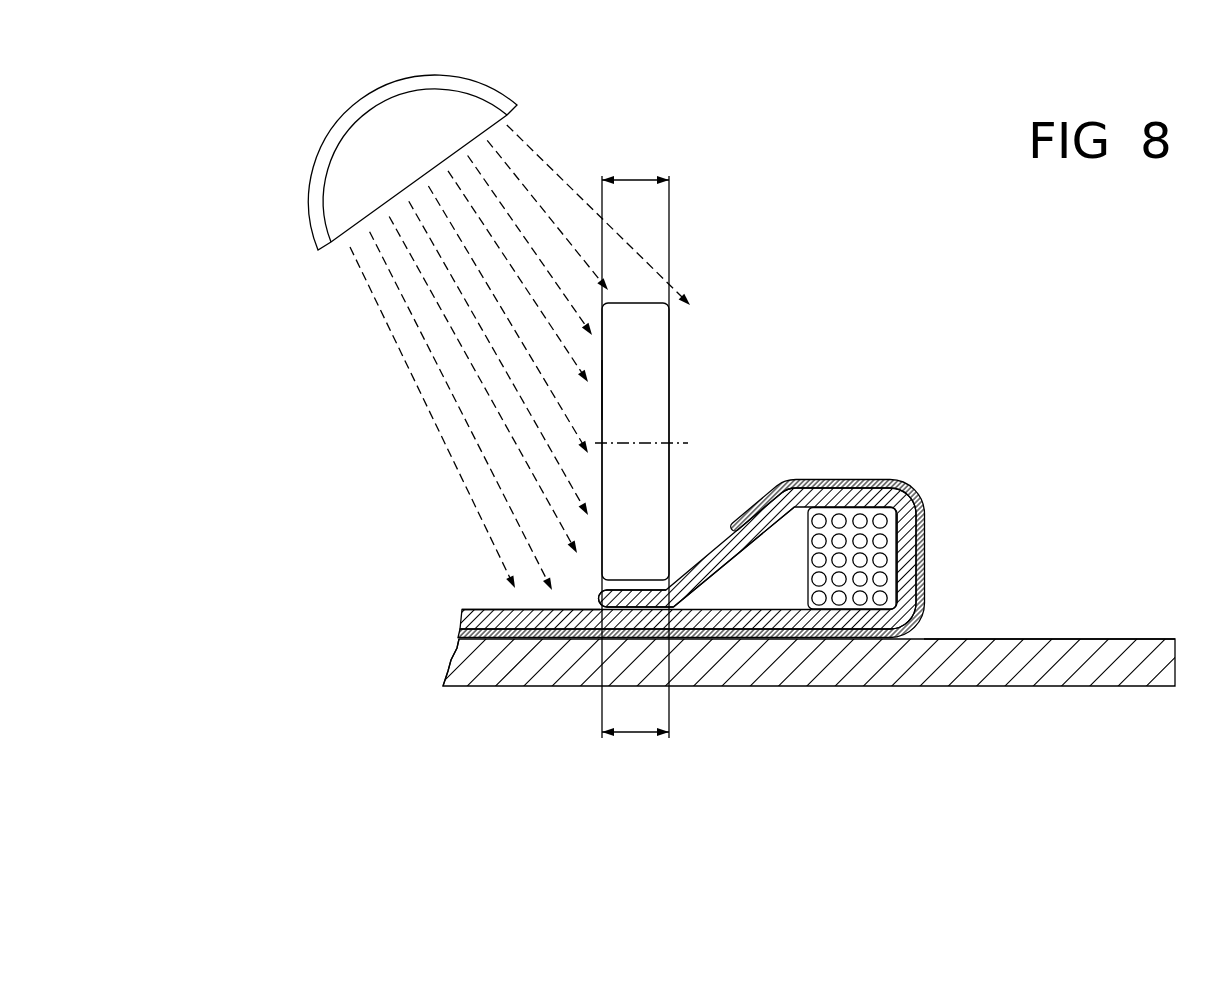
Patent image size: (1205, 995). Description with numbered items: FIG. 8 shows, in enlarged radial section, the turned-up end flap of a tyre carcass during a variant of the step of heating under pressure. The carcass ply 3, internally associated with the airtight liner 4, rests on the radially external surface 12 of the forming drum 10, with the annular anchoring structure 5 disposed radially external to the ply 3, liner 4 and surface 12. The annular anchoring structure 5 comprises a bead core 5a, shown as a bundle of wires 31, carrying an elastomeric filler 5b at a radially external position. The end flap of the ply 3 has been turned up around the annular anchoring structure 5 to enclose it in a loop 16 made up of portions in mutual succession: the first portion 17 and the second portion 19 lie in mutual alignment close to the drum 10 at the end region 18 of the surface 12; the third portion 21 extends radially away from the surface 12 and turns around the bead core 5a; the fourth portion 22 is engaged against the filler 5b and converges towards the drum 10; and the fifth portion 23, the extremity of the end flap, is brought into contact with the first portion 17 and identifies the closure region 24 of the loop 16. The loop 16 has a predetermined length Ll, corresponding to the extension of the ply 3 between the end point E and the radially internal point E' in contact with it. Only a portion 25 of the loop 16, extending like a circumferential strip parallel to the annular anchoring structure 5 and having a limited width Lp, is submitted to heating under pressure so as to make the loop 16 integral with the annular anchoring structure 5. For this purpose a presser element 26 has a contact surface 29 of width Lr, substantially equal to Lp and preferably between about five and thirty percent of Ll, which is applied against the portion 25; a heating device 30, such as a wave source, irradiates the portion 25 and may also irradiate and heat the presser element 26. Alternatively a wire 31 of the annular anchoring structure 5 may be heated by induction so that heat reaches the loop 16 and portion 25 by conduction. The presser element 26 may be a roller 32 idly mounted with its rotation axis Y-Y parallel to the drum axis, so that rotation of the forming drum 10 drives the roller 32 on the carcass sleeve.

The carcass ply 3 is at (474, 606).
The liner 4 is at (449, 651).
The annular anchoring structure 5 is at (766, 614).
The bead core 5a is at (890, 568).
The elastomeric filler 5b is at (783, 563).
The forming drum 10 is at (945, 688).
The radially external surface 12 is at (500, 610).
The loop 16 is at (848, 480).
The first portion 17 is at (637, 623).
The end region 18 is at (830, 638).
The second portion 19 is at (727, 637).
The third portion 21 is at (905, 538).
The fourth portion 22 is at (727, 548).
The fifth portion 23 is at (640, 600).
The closure region 24 is at (618, 582).
The portion 25 is at (640, 582).
The presser element 26 is at (700, 358).
The contact surface 29 is at (643, 337).
The heating device 30 is at (490, 55).
The wire 31 is at (880, 518).
The roller 32 is at (652, 392).
The end point E is at (575, 576).
The radially internal point E' is at (542, 677).
The width of contact surface Lr is at (637, 180).
The extension of portion 25 Lp is at (637, 733).
The predetermined length of loop Ll is at (907, 588).
The rotation axis of roller Y-Y is at (688, 443).